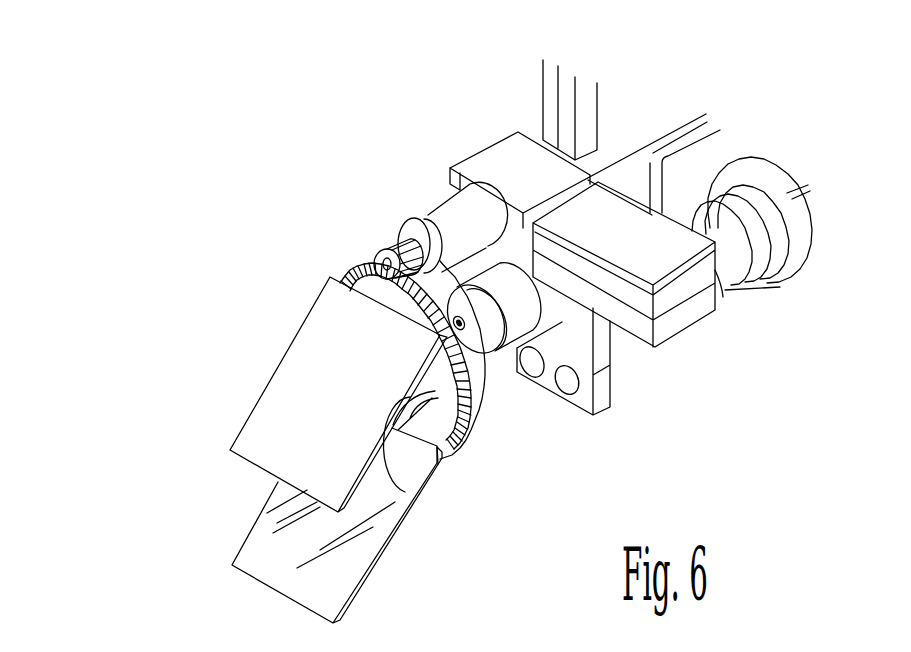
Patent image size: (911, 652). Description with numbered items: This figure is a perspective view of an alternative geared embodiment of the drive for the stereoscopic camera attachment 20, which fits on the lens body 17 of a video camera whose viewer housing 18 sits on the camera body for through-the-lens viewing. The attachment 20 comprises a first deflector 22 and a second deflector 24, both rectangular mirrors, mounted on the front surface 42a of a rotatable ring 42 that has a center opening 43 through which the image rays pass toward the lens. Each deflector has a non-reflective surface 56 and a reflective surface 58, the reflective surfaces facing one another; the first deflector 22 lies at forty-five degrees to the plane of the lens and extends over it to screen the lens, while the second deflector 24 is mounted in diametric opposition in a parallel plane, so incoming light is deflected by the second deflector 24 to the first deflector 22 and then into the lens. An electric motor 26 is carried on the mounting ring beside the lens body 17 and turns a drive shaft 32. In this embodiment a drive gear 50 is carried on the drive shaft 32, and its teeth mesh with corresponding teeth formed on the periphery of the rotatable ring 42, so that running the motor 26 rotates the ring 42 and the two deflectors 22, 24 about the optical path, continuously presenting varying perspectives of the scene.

The lens body 17 is at (530, 320).
The viewer housing 18 is at (680, 310).
The attachment 20 is at (285, 301).
The first deflector 22 is at (363, 397).
The second deflector 24 is at (347, 604).
The electric motor 26 is at (447, 217).
The drive shaft 32 is at (413, 215).
The rotatable ring 42 is at (482, 396).
The front surface 42a is at (458, 446).
The center opening 43 is at (413, 492).
The drive gear 50 is at (380, 257).
The non-reflective surface 56 is at (287, 424).
The reflective surface 58 is at (284, 564).